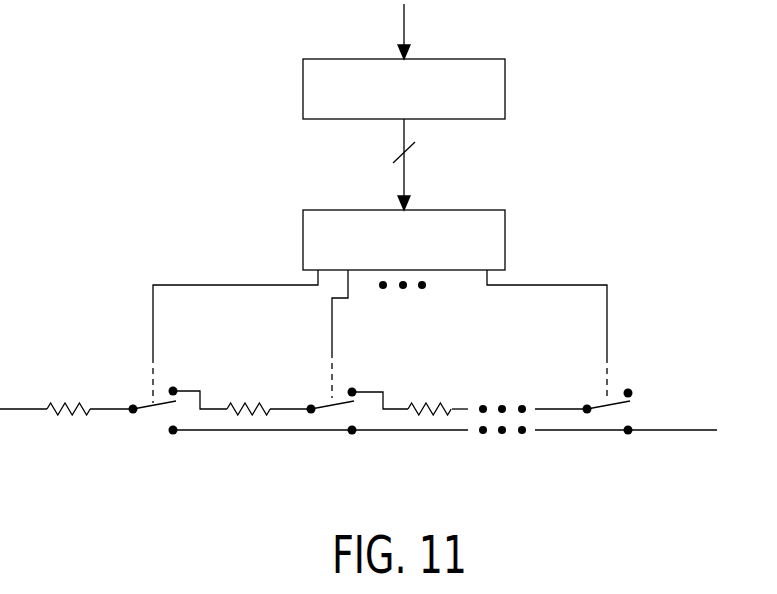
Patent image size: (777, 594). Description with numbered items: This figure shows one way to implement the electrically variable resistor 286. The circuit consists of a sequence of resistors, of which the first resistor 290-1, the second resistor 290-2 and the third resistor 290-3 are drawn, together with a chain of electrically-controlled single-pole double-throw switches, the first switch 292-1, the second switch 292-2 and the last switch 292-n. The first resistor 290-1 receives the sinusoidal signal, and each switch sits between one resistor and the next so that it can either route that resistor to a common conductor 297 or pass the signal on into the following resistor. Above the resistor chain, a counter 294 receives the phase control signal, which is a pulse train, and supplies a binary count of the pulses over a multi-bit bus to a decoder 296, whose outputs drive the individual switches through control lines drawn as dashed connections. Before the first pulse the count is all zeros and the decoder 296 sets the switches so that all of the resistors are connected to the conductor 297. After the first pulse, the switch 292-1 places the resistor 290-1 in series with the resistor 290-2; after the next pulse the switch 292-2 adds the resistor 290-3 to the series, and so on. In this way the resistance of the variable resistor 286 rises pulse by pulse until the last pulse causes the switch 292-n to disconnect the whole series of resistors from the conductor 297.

The variable resistor 286 is at (178, 76).
The counter 294 is at (505, 93).
The decoder 296 is at (505, 233).
The first resistor 290-1 is at (82, 405).
The second resistor 290-2 is at (258, 405).
The third resistor 290-3 is at (427, 405).
The first SPDT switch 292-1 is at (157, 417).
The second SPDT switch 292-2 is at (337, 419).
The last SPDT switch 292-n is at (607, 419).
The conductor 297 is at (688, 435).